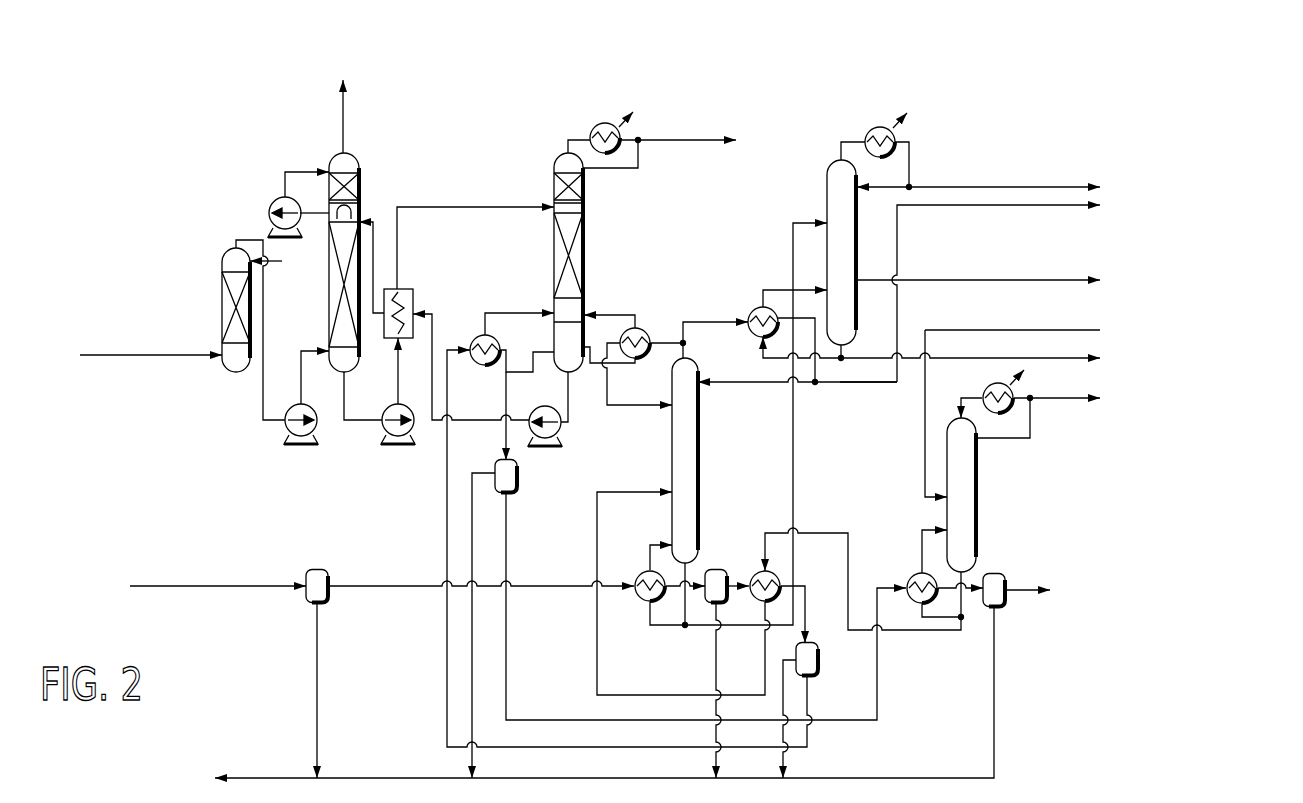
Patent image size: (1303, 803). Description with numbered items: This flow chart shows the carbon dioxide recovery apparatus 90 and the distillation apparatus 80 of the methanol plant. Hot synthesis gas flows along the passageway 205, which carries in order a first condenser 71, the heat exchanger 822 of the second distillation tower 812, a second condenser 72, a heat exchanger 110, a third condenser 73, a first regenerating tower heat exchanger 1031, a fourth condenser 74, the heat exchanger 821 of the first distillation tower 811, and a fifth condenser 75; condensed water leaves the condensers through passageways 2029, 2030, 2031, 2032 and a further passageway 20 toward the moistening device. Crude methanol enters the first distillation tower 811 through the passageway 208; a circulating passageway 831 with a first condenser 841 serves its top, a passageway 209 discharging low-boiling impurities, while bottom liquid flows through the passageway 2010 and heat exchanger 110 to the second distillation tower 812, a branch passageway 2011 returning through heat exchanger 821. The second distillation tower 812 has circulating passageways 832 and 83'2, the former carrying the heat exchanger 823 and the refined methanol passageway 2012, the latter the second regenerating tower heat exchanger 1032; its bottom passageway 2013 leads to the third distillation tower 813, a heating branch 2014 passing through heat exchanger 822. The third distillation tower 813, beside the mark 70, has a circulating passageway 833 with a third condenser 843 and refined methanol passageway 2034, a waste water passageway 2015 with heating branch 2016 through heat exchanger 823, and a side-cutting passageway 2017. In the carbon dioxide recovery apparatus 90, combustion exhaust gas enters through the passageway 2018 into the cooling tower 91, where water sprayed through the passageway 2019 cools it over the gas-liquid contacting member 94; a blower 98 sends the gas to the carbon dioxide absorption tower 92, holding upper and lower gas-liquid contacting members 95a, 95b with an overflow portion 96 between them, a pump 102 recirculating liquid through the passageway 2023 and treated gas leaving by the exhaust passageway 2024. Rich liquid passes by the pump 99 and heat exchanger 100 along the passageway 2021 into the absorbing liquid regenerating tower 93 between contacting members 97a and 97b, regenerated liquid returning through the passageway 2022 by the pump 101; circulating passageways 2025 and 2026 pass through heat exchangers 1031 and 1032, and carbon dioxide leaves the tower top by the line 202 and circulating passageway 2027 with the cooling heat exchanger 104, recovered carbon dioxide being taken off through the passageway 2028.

The passageway 20 is at (995, 700).
The methanol purification unit 70 is at (837, 93).
The first condenser 71 is at (322, 570).
The second condenser 72 is at (716, 570).
The third condenser 73 is at (818, 660).
The fourth condenser 74 is at (505, 496).
The fifth condenser 75 is at (1000, 574).
The distillation apparatus 80 is at (1022, 512).
The carbon dioxide recovery apparatus 90 is at (266, 157).
The cooling tower 91 is at (222, 290).
The carbon dioxide absorption tower 92 is at (329, 335).
The absorbing liquid regenerating tower 93 is at (584, 258).
The gas-liquid contacting member 94 is at (222, 320).
The upper gas-liquid contacting member 95a is at (360, 180).
The lower gas-liquid contacting member 95b is at (329, 315).
The overflow portion 96 is at (366, 205).
The upper gas-liquid contacting member 97a is at (553, 180).
The lower gas-liquid contacting member 97b is at (553, 238).
The blower 98 is at (300, 446).
The pump 99 is at (398, 446).
The heat exchanger 100 is at (413, 292).
The pump 101 is at (545, 446).
The pump 102 is at (272, 204).
The cooling heat exchanger 104 is at (605, 122).
The heat exchanger 110 is at (756, 568).
The first regenerating tower heat exchanger 1031 is at (478, 366).
The second regenerating tower heat exchanger 1032 is at (626, 328).
The first distillation tower 811 is at (978, 486).
The second distillation tower 812 is at (700, 456).
The third distillation tower 813 is at (826, 190).
The heat exchanger 821 is at (912, 576).
The heat exchanger 822 is at (636, 604).
The heat exchanger 823 is at (750, 306).
The circulating passageway 831 is at (1031, 438).
The circulating passageway 832 is at (700, 318).
The circulating passageway 83'2 is at (627, 374).
The circulating passageway 833 is at (842, 142).
The first condenser 841 is at (984, 392).
The third condenser 843 is at (880, 126).
The overhead gas line 202 is at (568, 135).
The passageway 205 is at (262, 590).
The passageway 208 is at (928, 330).
The passageway 209 is at (1082, 400).
The passageway 2010 is at (926, 632).
The first distillation-heating passageway 2011 is at (924, 490).
The passageway 2012 is at (858, 385).
The passageway 2013 is at (682, 628).
The second distillation tower-heating passageway 2014 is at (648, 548).
The waste water-discharging passageway 2015 is at (896, 383).
The third distillation tower-heating passageway 2016 is at (817, 383).
The side-cutting passageway 2017 is at (1020, 280).
The combustion exhaust gas-feeding passageway 2018 is at (186, 356).
The passageway 2019 is at (284, 265).
The passageway 2021 is at (346, 422).
The passageway 2022 is at (532, 408).
The passageway 2023 is at (296, 170).
The exhaust passageway 2024 is at (345, 128).
The circulating passageway 2025 is at (490, 313).
The circulating passageway 2026 is at (612, 308).
The circulating passageway 2027 is at (640, 170).
The passageway 2028 is at (660, 138).
The passageway 2029 is at (318, 698).
The passageway 2030 is at (714, 766).
The passageway 2031 is at (794, 478).
The passageway 2032 is at (474, 652).
The passageway 2034 is at (972, 186).